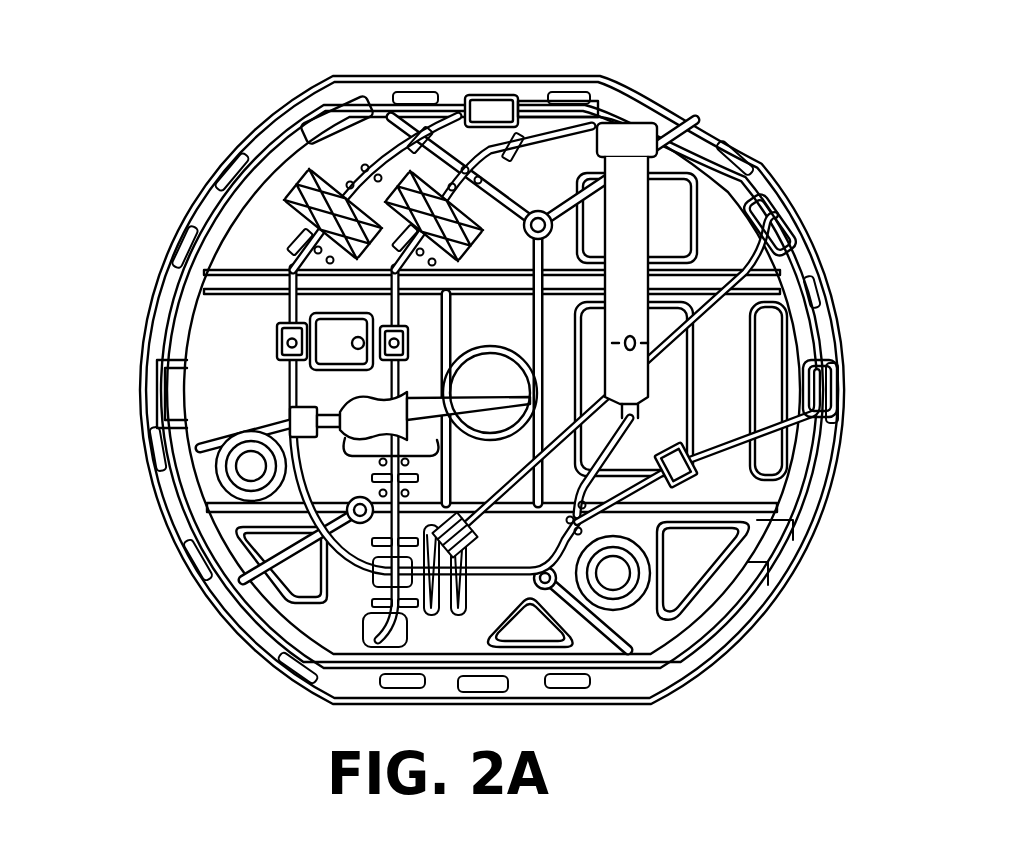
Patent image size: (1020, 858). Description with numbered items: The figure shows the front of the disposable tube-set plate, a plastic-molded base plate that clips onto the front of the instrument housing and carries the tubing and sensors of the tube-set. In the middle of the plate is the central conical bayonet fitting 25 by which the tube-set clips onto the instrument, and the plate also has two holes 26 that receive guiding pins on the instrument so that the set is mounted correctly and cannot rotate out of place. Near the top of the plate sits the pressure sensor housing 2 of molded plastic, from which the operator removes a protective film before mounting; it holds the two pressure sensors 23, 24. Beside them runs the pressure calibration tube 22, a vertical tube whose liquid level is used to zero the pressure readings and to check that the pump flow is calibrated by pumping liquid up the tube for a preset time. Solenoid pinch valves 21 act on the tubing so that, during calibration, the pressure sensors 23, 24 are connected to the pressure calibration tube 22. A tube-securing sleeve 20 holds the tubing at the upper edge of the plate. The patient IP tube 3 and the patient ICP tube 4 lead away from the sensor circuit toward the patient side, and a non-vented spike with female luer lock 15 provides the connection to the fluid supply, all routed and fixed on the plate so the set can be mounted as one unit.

The pressure sensor housing 2 is at (220, 303).
The patient IP tube 3 is at (690, 452).
The patient ICP tube 4 is at (646, 420).
The non-vented spike with female luer lock 15 is at (338, 396).
The tube-securing sleeve 20 is at (506, 107).
The solenoid pinch valves 21 is at (433, 215).
The pressure calibration tube 22 is at (632, 248).
The pressure sensor 23 is at (230, 286).
The pressure sensor 24 is at (347, 342).
The central conical bayonet fitting 25 is at (507, 330).
The holes in the plate for guiding pins 26 is at (707, 700).